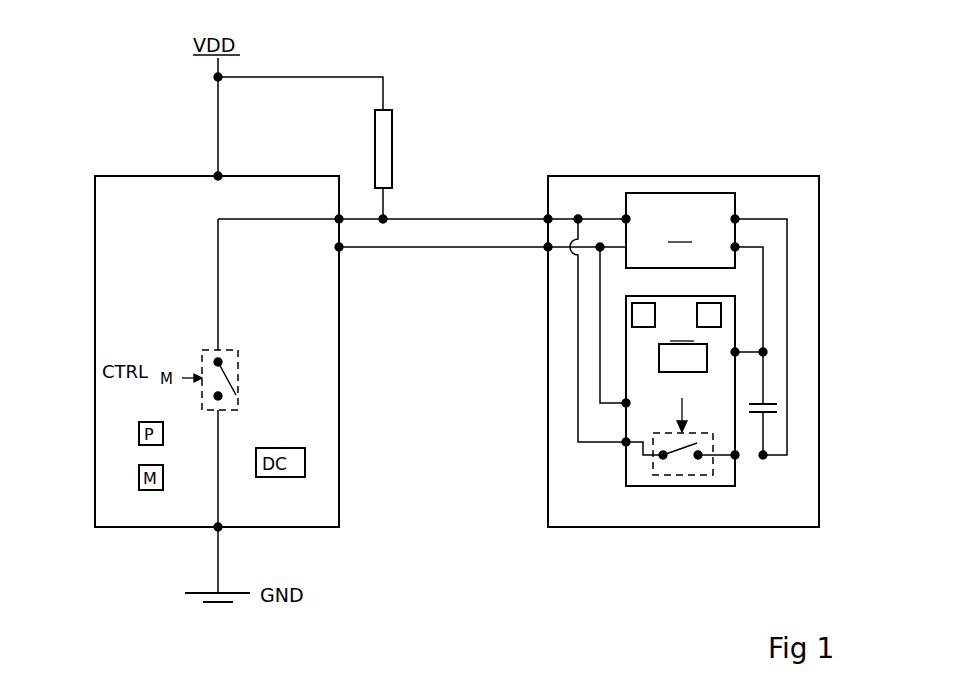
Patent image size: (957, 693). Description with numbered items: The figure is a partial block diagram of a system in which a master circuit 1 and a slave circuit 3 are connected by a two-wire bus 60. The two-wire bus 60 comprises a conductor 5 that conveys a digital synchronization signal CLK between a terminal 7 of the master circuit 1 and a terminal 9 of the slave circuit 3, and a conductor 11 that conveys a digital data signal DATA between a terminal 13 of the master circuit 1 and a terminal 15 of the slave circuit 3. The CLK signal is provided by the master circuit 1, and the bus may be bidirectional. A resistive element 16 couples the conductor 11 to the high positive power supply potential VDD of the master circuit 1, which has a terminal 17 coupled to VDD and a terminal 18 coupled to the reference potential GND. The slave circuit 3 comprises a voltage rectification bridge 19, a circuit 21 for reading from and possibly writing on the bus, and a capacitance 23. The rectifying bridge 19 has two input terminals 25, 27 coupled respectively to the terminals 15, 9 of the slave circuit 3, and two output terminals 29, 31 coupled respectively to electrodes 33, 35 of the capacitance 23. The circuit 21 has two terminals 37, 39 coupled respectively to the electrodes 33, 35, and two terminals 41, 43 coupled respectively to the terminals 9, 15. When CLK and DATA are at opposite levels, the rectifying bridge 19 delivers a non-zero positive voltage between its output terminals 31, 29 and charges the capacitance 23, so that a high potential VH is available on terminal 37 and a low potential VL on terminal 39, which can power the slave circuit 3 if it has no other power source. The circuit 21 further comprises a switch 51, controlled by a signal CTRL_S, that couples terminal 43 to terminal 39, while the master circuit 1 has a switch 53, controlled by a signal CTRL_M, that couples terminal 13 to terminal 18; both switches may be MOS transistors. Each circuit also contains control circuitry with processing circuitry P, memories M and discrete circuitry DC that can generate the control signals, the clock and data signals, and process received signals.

The master circuit 1 is at (112, 210).
The slave circuit 3 is at (815, 192).
The conductor 5 is at (450, 249).
The terminal 7 is at (339, 249).
The terminal 9 is at (548, 249).
The conductor 11 is at (512, 218).
The terminal 13 is at (339, 218).
The terminal 15 is at (548, 218).
The resistive element 16 is at (380, 128).
The terminal 17 is at (218, 176).
The terminal 18 is at (212, 538).
The voltage rectification bridge 19 is at (680, 230).
The circuit 21 is at (691, 391).
The capacitance 23 is at (786, 408).
The input terminal 25 is at (626, 218).
The input terminal 27 is at (600, 246).
The output terminal 29 is at (735, 247).
The output terminal 31 is at (735, 219).
The electrode 33 is at (763, 352).
The electrode 35 is at (764, 457).
The terminal 37 is at (735, 352).
The terminal 39 is at (736, 457).
The terminal 41 is at (626, 405).
The terminal 43 is at (626, 443).
The switch 51 is at (668, 475).
The switch 53 is at (246, 373).
The two-wire bus 60 is at (420, 183).